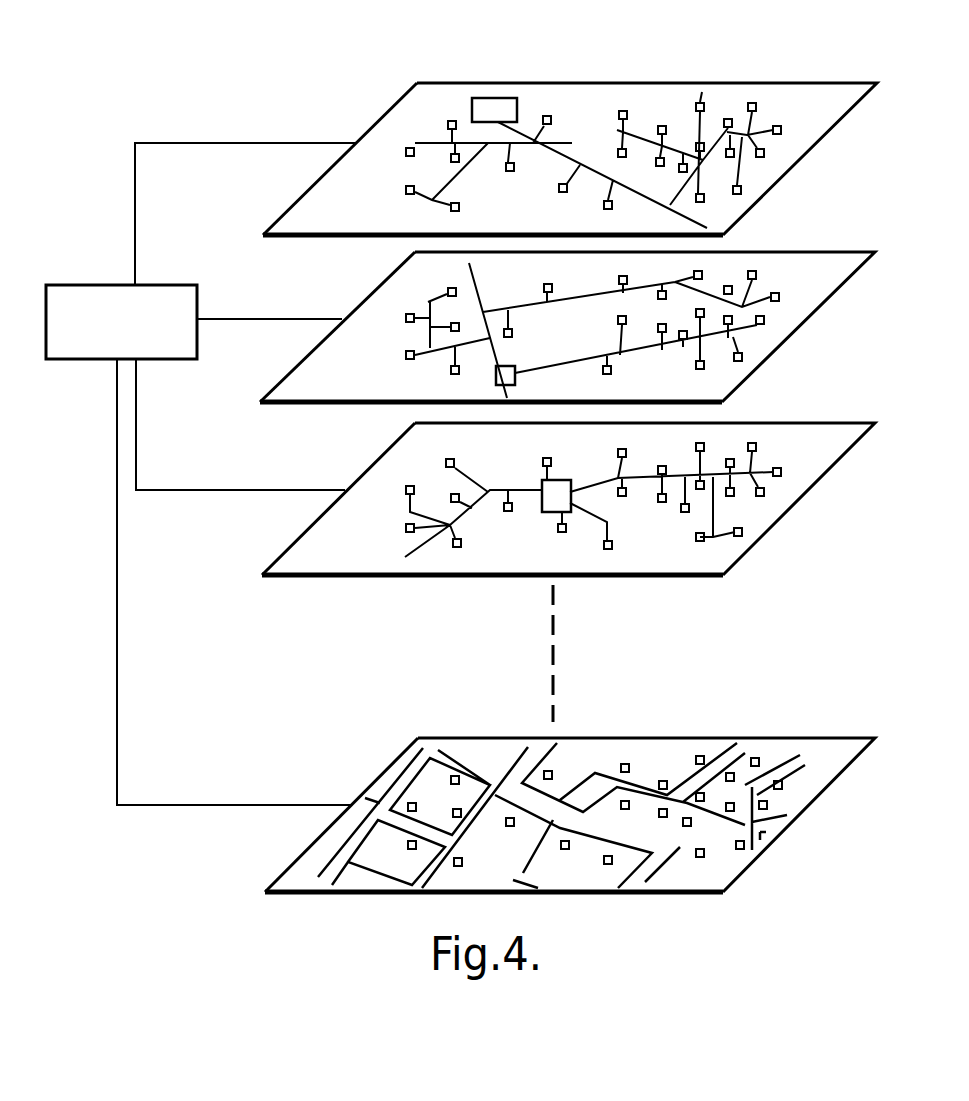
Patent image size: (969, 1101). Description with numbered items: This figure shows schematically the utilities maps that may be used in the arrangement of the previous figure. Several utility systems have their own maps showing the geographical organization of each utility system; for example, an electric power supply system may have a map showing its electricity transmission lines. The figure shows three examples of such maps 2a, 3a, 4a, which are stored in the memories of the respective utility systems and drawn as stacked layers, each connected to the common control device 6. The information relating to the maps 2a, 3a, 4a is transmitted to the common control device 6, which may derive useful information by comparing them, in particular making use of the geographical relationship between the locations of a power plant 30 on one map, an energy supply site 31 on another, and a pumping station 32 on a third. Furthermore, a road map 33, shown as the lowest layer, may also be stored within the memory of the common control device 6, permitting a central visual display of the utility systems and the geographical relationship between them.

The common control device 6 is at (100, 359).
The power plant 30 is at (497, 108).
The utility map 2a is at (570, 127).
The utility map 4a is at (567, 327).
The pumping station 32 is at (516, 377).
The utility map 3a is at (568, 499).
The energy supply site 31 is at (548, 513).
The road map 33 is at (795, 822).